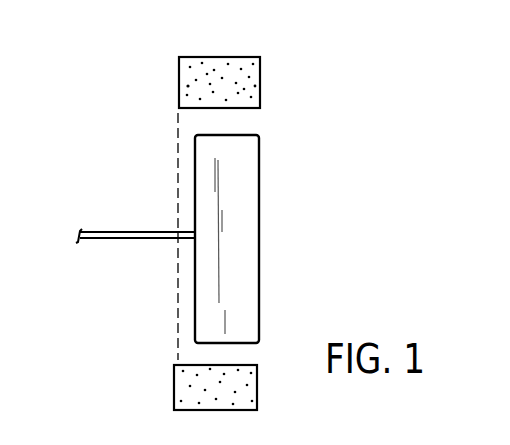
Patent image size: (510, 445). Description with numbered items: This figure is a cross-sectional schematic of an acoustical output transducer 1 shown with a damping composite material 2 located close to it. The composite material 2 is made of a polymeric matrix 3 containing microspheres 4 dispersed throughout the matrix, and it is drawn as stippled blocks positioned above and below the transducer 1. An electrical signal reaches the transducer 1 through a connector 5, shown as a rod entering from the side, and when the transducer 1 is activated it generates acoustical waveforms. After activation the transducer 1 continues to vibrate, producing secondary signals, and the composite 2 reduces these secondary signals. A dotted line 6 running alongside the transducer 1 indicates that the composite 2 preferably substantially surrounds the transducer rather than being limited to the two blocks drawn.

The transducer 1 is at (259, 240).
The composite material 2 is at (268, 63).
The polymeric matrix 3 is at (262, 98).
The microspheres 4 is at (188, 87).
The connector 5 is at (125, 232).
The dotted line 6 is at (178, 272).